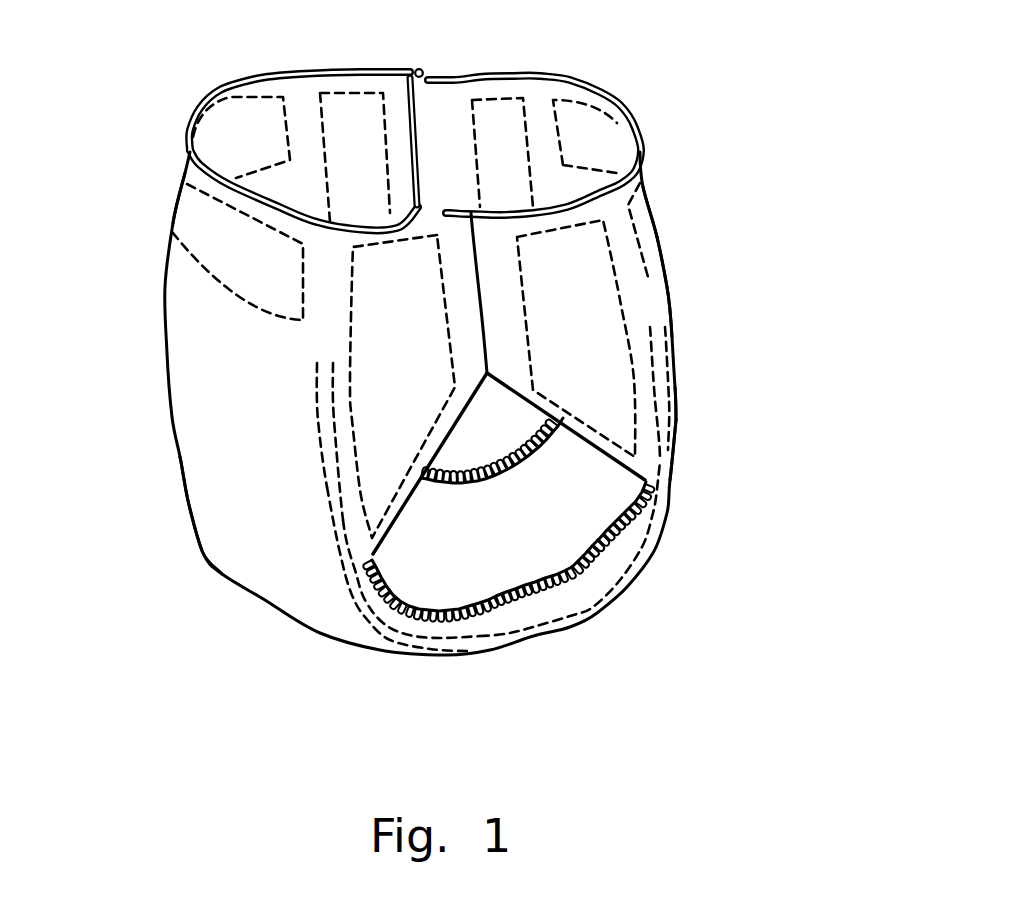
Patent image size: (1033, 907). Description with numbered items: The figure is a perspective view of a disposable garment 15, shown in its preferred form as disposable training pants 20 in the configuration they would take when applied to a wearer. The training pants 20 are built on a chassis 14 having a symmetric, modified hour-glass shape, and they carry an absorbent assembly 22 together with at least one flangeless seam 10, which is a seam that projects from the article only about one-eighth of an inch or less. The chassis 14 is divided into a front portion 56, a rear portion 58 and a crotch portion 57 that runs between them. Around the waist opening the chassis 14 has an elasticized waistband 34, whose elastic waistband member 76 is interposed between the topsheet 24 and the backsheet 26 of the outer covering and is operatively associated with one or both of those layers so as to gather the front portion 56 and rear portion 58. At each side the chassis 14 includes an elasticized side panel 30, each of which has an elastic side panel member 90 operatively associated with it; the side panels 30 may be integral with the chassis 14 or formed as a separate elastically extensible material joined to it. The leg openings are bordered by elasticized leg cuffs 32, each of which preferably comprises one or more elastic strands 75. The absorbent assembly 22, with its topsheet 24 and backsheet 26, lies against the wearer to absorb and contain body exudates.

The flangeless seam 10 is at (413, 70).
The chassis 14 is at (683, 403).
The disposable garment 15 is at (632, 76).
The disposable training pants 20 is at (725, 262).
The absorbent assembly 22 is at (563, 547).
The topsheet 24 is at (603, 500).
The backsheet 26 is at (205, 497).
The elasticized side panels 30 is at (579, 296).
The elasticized leg cuffs 32 is at (477, 625).
The elasticized waistband 34 is at (181, 198).
The front portion 56 is at (182, 320).
The crotch portion 57 is at (537, 633).
The rear portion 58 is at (677, 362).
The elastic strands 75 is at (370, 620).
The elastic waistband member 76 is at (175, 228).
The elastic side panel member 90 is at (373, 353).